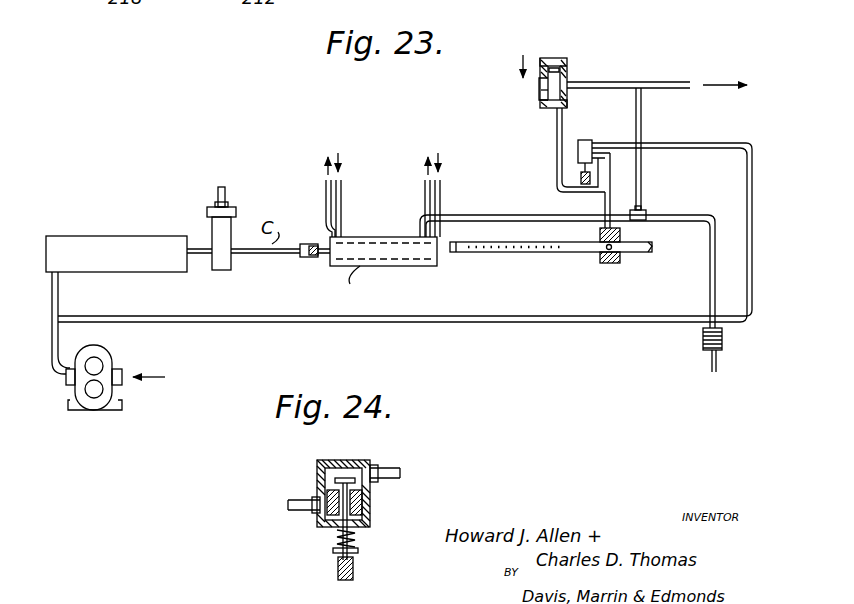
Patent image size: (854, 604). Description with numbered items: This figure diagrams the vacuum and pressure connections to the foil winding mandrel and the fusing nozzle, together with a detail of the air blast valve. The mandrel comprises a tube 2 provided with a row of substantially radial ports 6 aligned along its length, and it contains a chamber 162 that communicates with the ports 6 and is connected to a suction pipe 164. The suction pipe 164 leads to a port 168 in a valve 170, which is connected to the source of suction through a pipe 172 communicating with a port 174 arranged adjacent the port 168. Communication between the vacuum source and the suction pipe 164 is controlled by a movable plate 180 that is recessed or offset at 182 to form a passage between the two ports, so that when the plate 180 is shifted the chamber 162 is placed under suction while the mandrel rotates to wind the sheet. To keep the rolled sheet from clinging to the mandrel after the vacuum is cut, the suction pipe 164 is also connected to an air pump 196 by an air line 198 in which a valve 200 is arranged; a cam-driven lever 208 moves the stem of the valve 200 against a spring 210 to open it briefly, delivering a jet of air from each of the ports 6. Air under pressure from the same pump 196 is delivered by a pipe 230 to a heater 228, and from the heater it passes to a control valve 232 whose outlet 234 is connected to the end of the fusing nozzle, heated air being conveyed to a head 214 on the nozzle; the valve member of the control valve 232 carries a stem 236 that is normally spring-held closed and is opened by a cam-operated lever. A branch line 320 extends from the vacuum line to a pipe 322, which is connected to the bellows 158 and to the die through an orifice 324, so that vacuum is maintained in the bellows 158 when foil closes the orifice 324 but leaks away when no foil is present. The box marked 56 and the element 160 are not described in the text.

In FIG. 23, the heater 228 is at (115, 214).
In FIG. 23, the pipe 230 is at (52, 304).
In FIG. 23, the air pump 196 is at (114, 358).
In FIG. 23, the air line 198 is at (380, 322).
In FIG. 24, the air line 198 is at (386, 478).
In FIG. 23, the control valve 232 is at (223, 272).
In FIG. 23, the valve stem 236 is at (227, 195).
In FIG. 23, the outlet 234 is at (234, 255).
In FIG. 23, the head 214 is at (306, 260).
In FIG. 23, the heating box 56 is at (395, 267).
In FIG. 23, the orifice 324 is at (394, 237).
In FIG. 23, the pipe 322 is at (492, 220).
In FIG. 23, the tube 2 is at (530, 254).
In FIG. 23, the radial ports 6 is at (490, 254).
In FIG. 23, the chamber 162 is at (612, 266).
In FIG. 23, the suction pipe 164 is at (605, 224).
In FIG. 24, the suction pipe 164 is at (304, 502).
In FIG. 23, the valve 170 is at (592, 24).
In FIG. 23, the recess 182 is at (539, 104).
In FIG. 23, the movable plate 180 is at (540, 95).
In FIG. 23, the port 174 is at (565, 76).
In FIG. 23, the pipe 172 is at (628, 74).
In FIG. 23, the port 168 is at (568, 103).
In FIG. 23, the branch line 320 is at (643, 166).
In FIG. 23, the valve 200 is at (578, 146).
In FIG. 24, the valve 200 is at (347, 460).
In FIG. 23, the lever 208 is at (581, 182).
In FIG. 24, the lever 208 is at (355, 572).
In FIG. 23, the bellows 158 is at (724, 338).
In FIG. 23, the tube 160 is at (718, 363).
In FIG. 24, the spring 210 is at (336, 546).